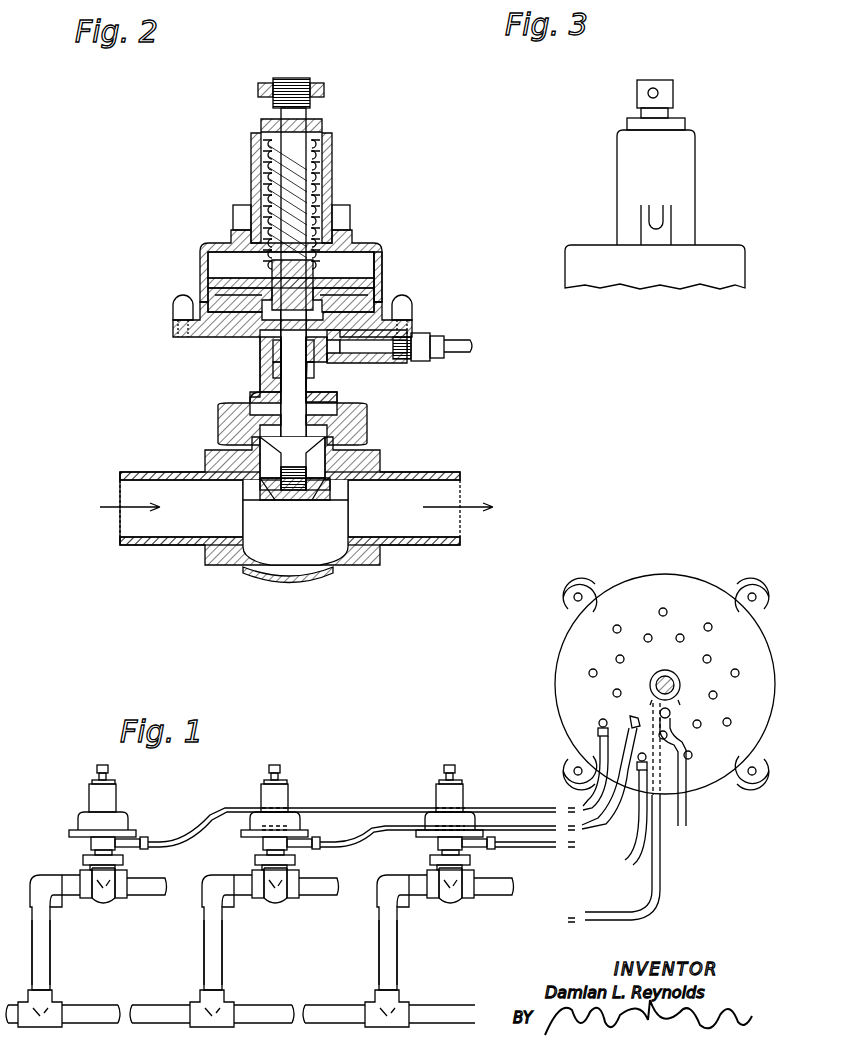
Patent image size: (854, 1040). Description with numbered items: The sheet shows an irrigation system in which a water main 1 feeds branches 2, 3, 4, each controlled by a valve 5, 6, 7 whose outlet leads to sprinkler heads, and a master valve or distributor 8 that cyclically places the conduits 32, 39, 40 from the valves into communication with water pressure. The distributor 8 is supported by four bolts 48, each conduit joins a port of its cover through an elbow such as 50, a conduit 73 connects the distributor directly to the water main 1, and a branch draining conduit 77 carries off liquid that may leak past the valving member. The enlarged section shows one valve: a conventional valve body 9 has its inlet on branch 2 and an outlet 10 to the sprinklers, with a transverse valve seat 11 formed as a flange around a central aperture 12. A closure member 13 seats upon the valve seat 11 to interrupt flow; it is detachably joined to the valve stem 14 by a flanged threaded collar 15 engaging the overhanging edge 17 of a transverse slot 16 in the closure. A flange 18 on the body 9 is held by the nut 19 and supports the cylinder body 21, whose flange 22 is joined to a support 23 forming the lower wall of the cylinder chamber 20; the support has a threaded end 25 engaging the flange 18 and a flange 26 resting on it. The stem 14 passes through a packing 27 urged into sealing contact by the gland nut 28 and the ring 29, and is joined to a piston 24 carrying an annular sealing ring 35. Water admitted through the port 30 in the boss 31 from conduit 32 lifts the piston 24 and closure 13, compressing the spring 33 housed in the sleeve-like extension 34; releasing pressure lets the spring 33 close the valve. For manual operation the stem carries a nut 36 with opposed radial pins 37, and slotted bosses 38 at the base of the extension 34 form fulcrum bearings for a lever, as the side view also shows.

In FIG. 1, the water main 1 is at (140, 1003).
In FIG. 2, the branch 2 is at (135, 542).
In FIG. 1, the branch 2 is at (52, 957).
In FIG. 1, the branch 3 is at (224, 953).
In FIG. 1, the branch 4 is at (400, 953).
In FIG. 2, the valve 5 is at (201, 371).
In FIG. 1, the valve 5 is at (95, 846).
In FIG. 1, the valve 6 is at (265, 846).
In FIG. 1, the valve 7 is at (440, 845).
In FIG. 1, the distributor 8 is at (665, 684).
In FIG. 2, the valve body 9 is at (305, 568).
In FIG. 2, the outlet 10 is at (420, 472).
In FIG. 2, the valve seat 11 is at (253, 503).
In FIG. 2, the central aperture 12 is at (290, 503).
In FIG. 2, the valve closure member 13 is at (330, 488).
In FIG. 2, the valve stem 14 is at (303, 416).
In FIG. 3, the valve stem 14 is at (670, 115).
In FIG. 2, the flanged threaded collar 15 is at (278, 470).
In FIG. 2, the transverse slot 16 is at (320, 472).
In FIG. 2, the overhanging edge 17 is at (265, 480).
In FIG. 2, the flange 18 is at (337, 404).
In FIG. 2, the nut 19 is at (367, 422).
In FIG. 2, the cylinder chamber 20 is at (356, 262).
In FIG. 2, the cylinder body 21 is at (200, 268).
In FIG. 3, the cylinder body 21 is at (732, 252).
In FIG. 2, the flange 22 is at (173, 318).
In FIG. 2, the support 23 is at (260, 374).
In FIG. 2, the piston 24 is at (362, 288).
In FIG. 2, the threaded end 25 is at (245, 433).
In FIG. 2, the flange 26 is at (250, 398).
In FIG. 2, the packing 27 is at (314, 368).
In FIG. 2, the gland nut 28 is at (262, 300).
In FIG. 2, the ring 29 is at (274, 347).
In FIG. 2, the port 30 is at (372, 348).
In FIG. 2, the boss 31 is at (415, 358).
In FIG. 2, the conduit 32 is at (450, 340).
In FIG. 1, the conduit 32 is at (158, 830).
In FIG. 2, the compression spring 33 is at (322, 178).
In FIG. 2, the sleeve-like extension 34 is at (334, 197).
In FIG. 3, the sleeve-like extension 34 is at (692, 200).
In FIG. 2, the annular sealing ring 35 is at (382, 272).
In FIG. 2, the nut 36 is at (300, 80).
In FIG. 2, the radial pins 37 is at (260, 92).
In FIG. 3, the radial pins 37 is at (657, 90).
In FIG. 2, the slotted bosses 38 is at (233, 210).
In FIG. 3, the slotted bosses 38 is at (641, 224).
In FIG. 1, the conduit 39 is at (366, 836).
In FIG. 1, the conduit 40 is at (535, 848).
In FIG. 1, the bolts 48 is at (582, 590).
In FIG. 1, the elbow 50 is at (606, 715).
In FIG. 1, the conduit 73 is at (663, 877).
In FIG. 1, the branch draining conduit 77 is at (684, 818).